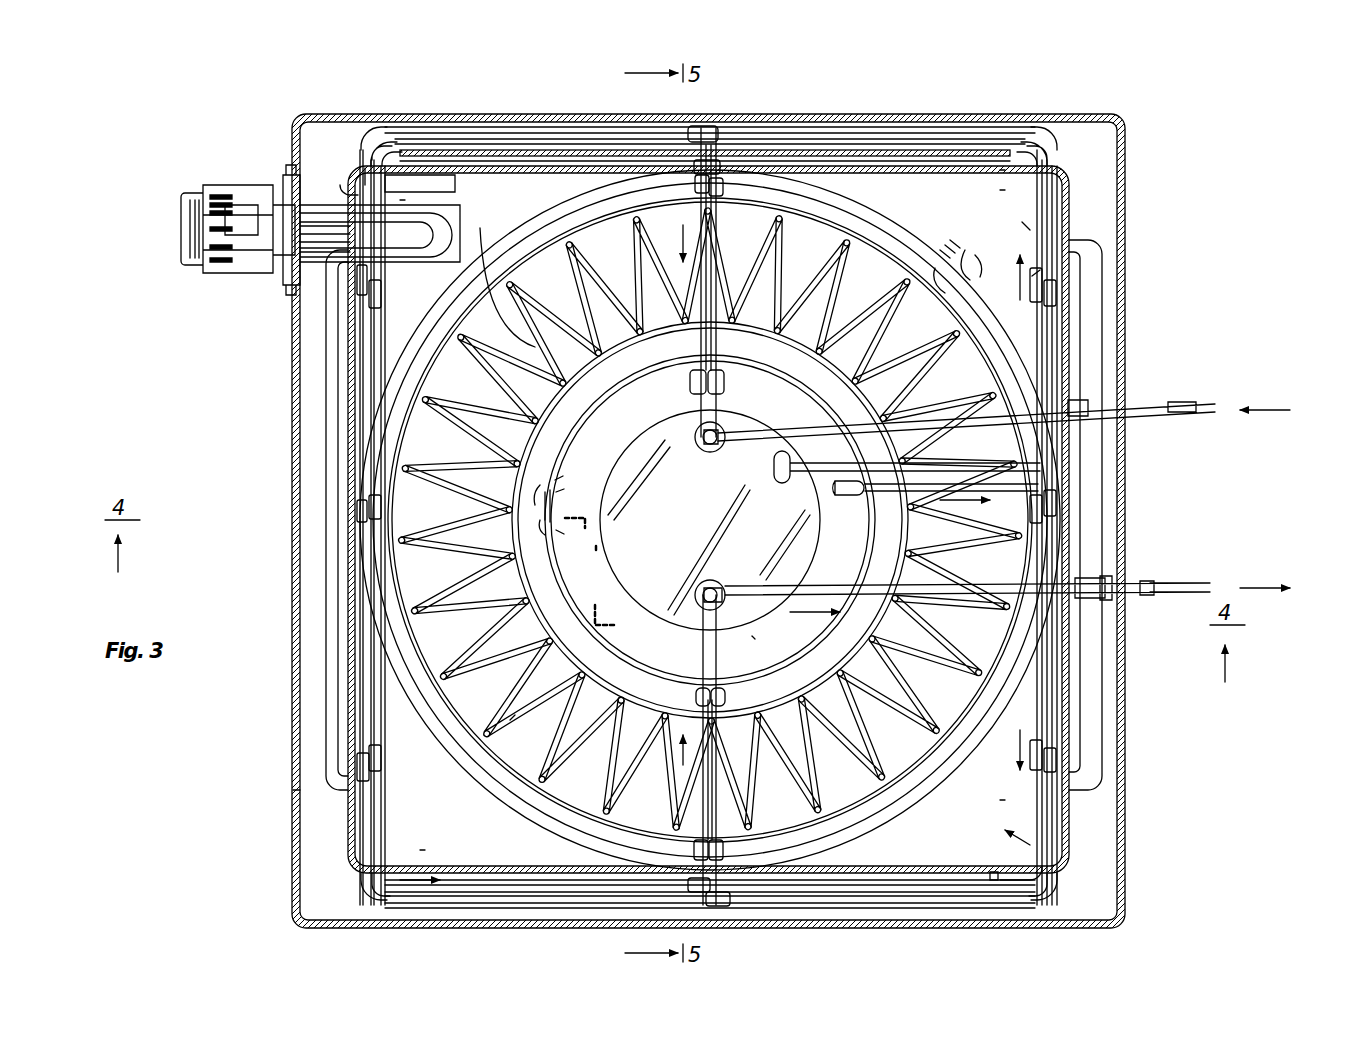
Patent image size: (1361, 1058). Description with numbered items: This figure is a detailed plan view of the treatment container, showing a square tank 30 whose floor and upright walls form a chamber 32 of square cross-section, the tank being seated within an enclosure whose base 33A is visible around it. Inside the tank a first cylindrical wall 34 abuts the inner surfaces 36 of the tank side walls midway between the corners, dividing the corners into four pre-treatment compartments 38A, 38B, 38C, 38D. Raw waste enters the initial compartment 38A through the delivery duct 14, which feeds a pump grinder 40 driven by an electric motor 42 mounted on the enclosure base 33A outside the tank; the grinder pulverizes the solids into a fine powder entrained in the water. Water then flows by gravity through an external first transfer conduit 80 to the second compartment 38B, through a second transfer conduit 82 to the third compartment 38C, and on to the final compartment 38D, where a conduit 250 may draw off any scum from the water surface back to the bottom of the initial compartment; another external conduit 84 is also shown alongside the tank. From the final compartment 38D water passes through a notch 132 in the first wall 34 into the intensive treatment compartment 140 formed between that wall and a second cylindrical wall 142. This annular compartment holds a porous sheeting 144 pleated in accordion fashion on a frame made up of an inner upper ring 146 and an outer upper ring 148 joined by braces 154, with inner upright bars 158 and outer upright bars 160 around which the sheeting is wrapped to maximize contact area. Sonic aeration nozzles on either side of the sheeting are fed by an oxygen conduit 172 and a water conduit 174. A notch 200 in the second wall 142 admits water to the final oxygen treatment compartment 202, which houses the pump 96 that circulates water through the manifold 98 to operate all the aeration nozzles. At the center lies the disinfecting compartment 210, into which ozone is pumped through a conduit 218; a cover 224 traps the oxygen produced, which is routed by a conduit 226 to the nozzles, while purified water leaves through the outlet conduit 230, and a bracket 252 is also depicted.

The delivery duct 14 is at (257, 225).
The tank 30 is at (1070, 255).
The chamber 32 is at (1048, 862).
The base 33A is at (290, 793).
The first cylindrical wall 34 is at (900, 217).
The inner surfaces 36 is at (895, 168).
The initial pre-treatment compartment 38A is at (515, 200).
The second pre-treatment compartment 38B is at (510, 850).
The third pre-treatment compartment 38C is at (995, 795).
The final pre-treatment compartment 38D is at (985, 190).
The pump grinder 40 is at (408, 258).
The electric motor 42 is at (220, 270).
The first gravity-flow transfer conduit 80 is at (328, 680).
The second transfer conduit 82 is at (993, 883).
The right return pipe loop 84 is at (1100, 720).
The pump 96 is at (837, 497).
The manifold 98 is at (712, 420).
The notch 132 is at (1045, 170).
The intensive treatment compartment 140 is at (960, 280).
The second cylindrical wall 142 is at (600, 398).
The porous sheeting 144 is at (1172, 860).
The inner upper ring 146 is at (783, 213).
The outer upper ring 148 is at (800, 220).
The braces 154 is at (515, 718).
The inner upright bars 158 is at (365, 490).
The outer upright bars 160 is at (372, 450).
The oxygen conduit 172 is at (700, 845).
The water conduit 174 is at (733, 877).
The notch 200 is at (548, 497).
The final oxygen treatment compartment 202 is at (580, 555).
The disinfecting compartment 210 is at (752, 636).
The conduit 218 is at (1215, 405).
The cover 224 is at (672, 613).
The conduit 226 is at (680, 200).
The conduit 230 is at (1205, 583).
The conduit 250 is at (865, 135).
The bracket 252 is at (410, 183).